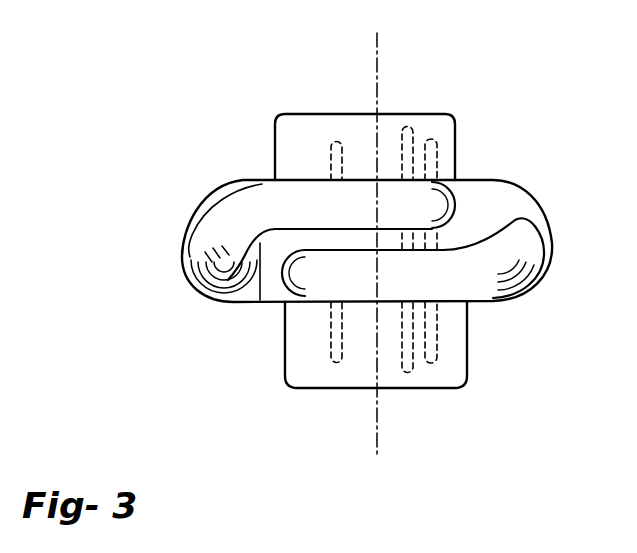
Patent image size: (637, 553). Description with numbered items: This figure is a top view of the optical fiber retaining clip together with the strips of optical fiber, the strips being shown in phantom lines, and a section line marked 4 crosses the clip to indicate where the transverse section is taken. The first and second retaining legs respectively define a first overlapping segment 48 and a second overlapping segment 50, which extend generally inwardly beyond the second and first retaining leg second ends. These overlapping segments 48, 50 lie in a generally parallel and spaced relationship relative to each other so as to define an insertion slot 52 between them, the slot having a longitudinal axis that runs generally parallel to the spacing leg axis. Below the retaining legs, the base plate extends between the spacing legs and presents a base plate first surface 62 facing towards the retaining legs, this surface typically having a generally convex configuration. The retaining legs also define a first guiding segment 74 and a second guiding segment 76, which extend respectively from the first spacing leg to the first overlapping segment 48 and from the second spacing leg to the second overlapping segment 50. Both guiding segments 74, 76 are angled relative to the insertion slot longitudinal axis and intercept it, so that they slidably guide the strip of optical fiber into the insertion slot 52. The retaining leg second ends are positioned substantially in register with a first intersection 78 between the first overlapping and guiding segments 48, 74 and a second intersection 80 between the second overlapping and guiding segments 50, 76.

The section line 4- 4 is at (410, 33).
The first overlapping segment 48 is at (348, 388).
The second overlapping segment 50 is at (455, 120).
The insertion slot 52 is at (250, 290).
The base plate first surface 62 is at (500, 213).
The first guiding segment 74 is at (562, 288).
The second guiding segment 76 is at (275, 176).
The first intersection 78 is at (480, 356).
The second intersection 80 is at (261, 135).